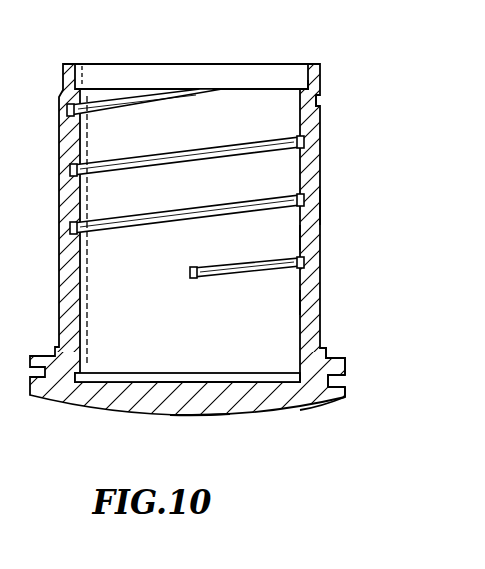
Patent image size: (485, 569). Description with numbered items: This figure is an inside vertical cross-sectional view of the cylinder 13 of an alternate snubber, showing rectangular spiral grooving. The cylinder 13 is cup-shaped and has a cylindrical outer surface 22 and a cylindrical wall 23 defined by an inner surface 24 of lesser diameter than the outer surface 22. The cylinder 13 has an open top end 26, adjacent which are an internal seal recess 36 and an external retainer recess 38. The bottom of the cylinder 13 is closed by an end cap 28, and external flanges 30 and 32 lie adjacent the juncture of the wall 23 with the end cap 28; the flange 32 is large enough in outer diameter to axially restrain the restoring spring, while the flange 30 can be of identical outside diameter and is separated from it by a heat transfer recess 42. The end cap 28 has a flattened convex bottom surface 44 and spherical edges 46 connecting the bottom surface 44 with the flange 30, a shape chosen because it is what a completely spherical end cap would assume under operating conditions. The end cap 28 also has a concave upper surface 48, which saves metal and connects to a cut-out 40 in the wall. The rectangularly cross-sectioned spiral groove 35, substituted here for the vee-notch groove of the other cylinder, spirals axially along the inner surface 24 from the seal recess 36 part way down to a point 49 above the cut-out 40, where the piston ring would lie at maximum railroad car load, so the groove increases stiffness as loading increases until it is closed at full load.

The cylinder 13 is at (320, 284).
The cylindrical outer surface 22 is at (320, 208).
The cylindrical wall 23 is at (309, 238).
The inner surface 24 is at (297, 303).
The open top end 26 is at (316, 64).
The end cap 28 is at (297, 389).
The external flange 30 is at (331, 392).
The external flange 32 is at (343, 360).
The rectangularly cross-sectioned spiral groove 35 is at (246, 143).
The internal seal recess 36 is at (306, 85).
The external retainer recess 38 is at (320, 100).
The cut-out 40 is at (298, 378).
The heat transfer recess 42 is at (333, 381).
The flattened convex bottom surface 44 is at (207, 415).
The spherical edges 46 is at (326, 403).
The concave upper surface 48 is at (198, 396).
The point 49 is at (191, 271).